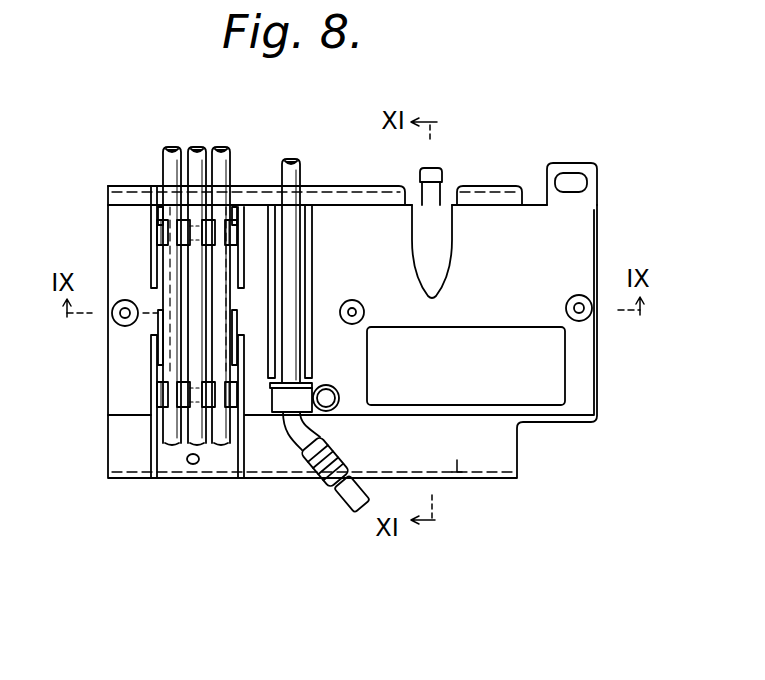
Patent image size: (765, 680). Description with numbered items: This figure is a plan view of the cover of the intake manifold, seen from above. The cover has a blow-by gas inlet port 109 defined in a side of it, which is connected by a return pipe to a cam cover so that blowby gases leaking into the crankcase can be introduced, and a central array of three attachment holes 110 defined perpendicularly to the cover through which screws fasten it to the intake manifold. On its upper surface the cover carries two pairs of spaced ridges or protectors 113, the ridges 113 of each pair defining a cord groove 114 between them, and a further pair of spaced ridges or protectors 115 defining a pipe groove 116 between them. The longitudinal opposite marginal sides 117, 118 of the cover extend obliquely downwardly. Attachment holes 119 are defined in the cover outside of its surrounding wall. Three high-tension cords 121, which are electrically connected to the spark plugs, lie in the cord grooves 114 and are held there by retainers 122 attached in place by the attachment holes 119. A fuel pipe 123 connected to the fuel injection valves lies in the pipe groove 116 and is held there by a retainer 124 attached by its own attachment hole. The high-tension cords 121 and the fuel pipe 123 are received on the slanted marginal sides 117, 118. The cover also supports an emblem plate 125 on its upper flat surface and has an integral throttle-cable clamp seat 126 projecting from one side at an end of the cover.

The blow-by gas inlet port 109 is at (442, 172).
The attachment holes 110 is at (118, 300).
The ridges or protectors 113 is at (152, 186).
The cord groove 114 is at (157, 349).
The ridges or protectors 115 is at (275, 333).
The pipe groove 116 is at (312, 297).
The longitudinal marginal side 117 is at (468, 478).
The longitudinal marginal side 118 is at (133, 186).
The attachment holes 119 is at (208, 228).
The high-tension cords 121 is at (223, 443).
The retainers 122 is at (155, 230).
The fuel pipe 123 is at (288, 273).
The retainer 124 is at (292, 400).
The emblem plate 125 is at (553, 370).
The throttle-cable clamp seat 126 is at (597, 170).